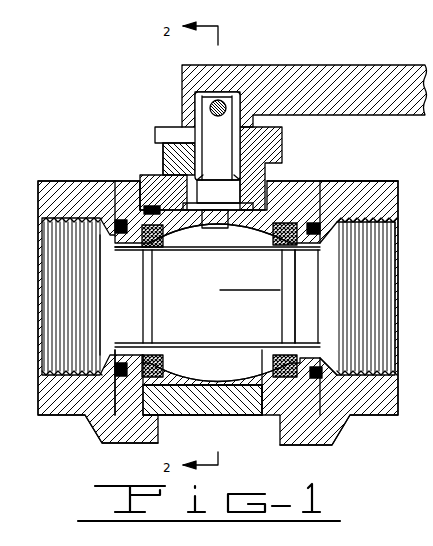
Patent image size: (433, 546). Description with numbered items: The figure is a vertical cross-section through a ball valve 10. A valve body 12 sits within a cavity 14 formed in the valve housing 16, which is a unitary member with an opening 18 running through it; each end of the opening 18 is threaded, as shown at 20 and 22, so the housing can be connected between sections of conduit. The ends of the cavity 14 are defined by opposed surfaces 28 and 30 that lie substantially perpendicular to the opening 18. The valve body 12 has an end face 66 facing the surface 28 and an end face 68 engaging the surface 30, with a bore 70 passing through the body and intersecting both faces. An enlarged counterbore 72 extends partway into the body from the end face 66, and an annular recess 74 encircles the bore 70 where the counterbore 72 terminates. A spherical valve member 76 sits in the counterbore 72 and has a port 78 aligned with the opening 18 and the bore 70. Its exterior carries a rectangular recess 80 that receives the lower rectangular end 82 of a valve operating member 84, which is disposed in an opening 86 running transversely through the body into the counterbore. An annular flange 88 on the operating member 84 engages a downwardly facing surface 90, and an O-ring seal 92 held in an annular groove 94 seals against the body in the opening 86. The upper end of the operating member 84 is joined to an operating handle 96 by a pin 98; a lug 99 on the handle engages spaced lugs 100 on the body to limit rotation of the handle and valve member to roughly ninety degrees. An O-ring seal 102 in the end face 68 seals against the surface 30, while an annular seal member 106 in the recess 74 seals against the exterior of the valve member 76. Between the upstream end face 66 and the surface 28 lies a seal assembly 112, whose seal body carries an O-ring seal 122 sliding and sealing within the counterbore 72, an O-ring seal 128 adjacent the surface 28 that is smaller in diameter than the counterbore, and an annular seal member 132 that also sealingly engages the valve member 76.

The ball valve 10 is at (300, 47).
The valve body 12 is at (210, 418).
The cavity 14 is at (247, 425).
The valve housing 16 is at (86, 417).
The opening 18 is at (58, 296).
The threads 20 is at (55, 268).
The threads 22 is at (378, 330).
The surface 28 is at (125, 180).
The surface 30 is at (322, 184).
The end face 66 is at (140, 398).
The end face 68 is at (312, 396).
The bore 70 is at (300, 346).
The counterbore 72 is at (238, 394).
The annular recess 74 is at (204, 396).
The valve member 76 is at (163, 356).
The port 78 is at (210, 295).
The rectangular recess 80 is at (219, 235).
The lower rectangular end 82 is at (211, 236).
The valve operating member 84 is at (218, 151).
The opening 86 is at (262, 160).
The annular flange 88 is at (163, 194).
The downwardly facing surface 90 is at (268, 183).
The O-ring seal 92 is at (195, 176).
The annular groove 94 is at (214, 172).
The operating handle 96 is at (326, 78).
The pin 98 is at (222, 100).
The lug 99 is at (155, 140).
The spaced lugs 100 is at (160, 160).
The O-ring seal 102 is at (330, 396).
The annular seal member 106 is at (285, 355).
The seal assembly 112 is at (128, 260).
The O-ring seal 122 is at (175, 373).
The O-ring seal 128 is at (110, 376).
The annular seal member 132 is at (152, 358).